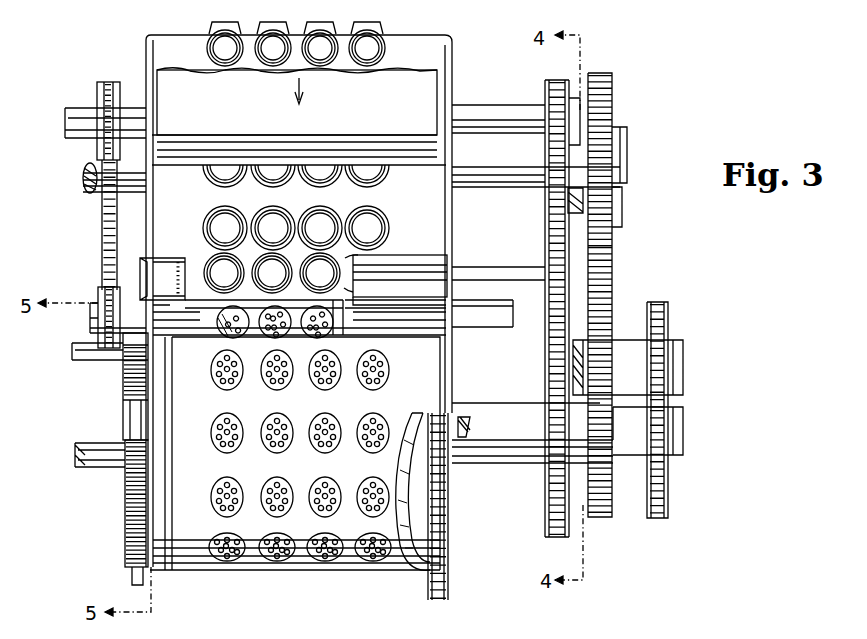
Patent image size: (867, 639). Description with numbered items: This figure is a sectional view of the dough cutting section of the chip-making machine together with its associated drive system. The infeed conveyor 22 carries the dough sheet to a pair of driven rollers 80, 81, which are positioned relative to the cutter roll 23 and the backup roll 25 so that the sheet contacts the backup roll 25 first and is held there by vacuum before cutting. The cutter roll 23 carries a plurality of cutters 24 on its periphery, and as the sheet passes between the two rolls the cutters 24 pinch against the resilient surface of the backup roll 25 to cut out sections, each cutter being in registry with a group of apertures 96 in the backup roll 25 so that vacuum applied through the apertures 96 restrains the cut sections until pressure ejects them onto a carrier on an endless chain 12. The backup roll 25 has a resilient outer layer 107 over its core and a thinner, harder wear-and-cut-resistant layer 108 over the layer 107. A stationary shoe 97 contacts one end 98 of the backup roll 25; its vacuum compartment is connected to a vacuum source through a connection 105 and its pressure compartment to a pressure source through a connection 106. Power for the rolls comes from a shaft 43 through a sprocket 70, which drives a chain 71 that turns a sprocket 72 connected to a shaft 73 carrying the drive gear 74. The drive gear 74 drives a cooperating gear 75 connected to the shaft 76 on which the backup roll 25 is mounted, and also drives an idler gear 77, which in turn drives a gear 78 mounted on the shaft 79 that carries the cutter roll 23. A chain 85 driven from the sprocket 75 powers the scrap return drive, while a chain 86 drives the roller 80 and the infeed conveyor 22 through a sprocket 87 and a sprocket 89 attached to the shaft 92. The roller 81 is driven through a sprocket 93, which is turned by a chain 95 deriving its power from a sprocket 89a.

The endless chain 12 is at (450, 590).
The infeed conveyor 22 is at (217, 108).
The cutter roll 23 is at (432, 198).
The cutters 24 is at (392, 216).
The backup roll 25 is at (217, 479).
The shaft 43 is at (683, 425).
The sprocket 70 is at (668, 472).
The chain 71 is at (657, 520).
The sprocket 72 is at (668, 315).
The shaft 73 is at (683, 360).
The drive gear 74 is at (612, 330).
The gear 75 is at (546, 520).
The shaft 76 is at (532, 440).
The idler gear 77 is at (612, 247).
The gear 78 is at (612, 92).
The shaft 79 is at (620, 150).
The driven roller 80 is at (429, 288).
The driven roller 81 is at (396, 322).
The chain 85 is at (560, 540).
The chain 86 is at (545, 196).
The sprocket 87 is at (545, 264).
The sprocket 89 is at (545, 88).
The sprocket 89a is at (97, 89).
The shaft 92 is at (465, 115).
The sprocket 93 is at (98, 295).
The chain 95 is at (102, 225).
The apertures 96 is at (334, 382).
The stationary shoe 97 is at (135, 525).
The end of backup roll 98 is at (150, 400).
The connection 105 is at (90, 362).
The connection 106 is at (132, 580).
The resilient outer layer 107 is at (416, 575).
The wear-and-cut-resistant layer 108 is at (418, 570).